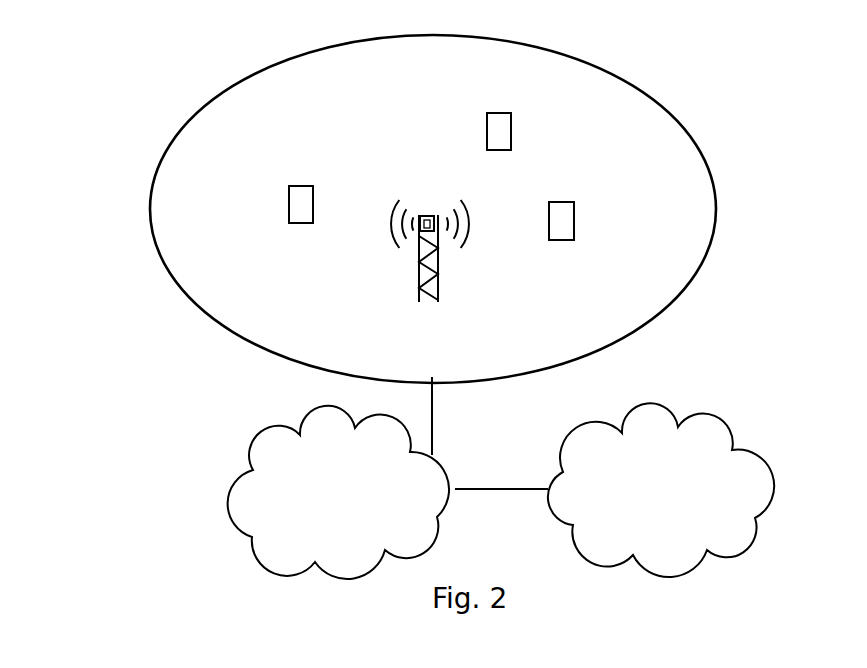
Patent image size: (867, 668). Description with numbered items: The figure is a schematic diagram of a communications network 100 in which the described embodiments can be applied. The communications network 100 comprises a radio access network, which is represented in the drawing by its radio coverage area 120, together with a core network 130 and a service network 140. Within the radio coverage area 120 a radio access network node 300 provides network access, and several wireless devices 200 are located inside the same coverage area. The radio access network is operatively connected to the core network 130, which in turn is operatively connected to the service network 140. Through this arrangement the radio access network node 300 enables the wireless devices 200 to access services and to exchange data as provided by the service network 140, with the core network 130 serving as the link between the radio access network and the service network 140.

The communications network 100 is at (143, 97).
The radio coverage area 120 is at (213, 321).
The wireless devices 200 is at (297, 192).
The radio access network node 300 is at (418, 288).
The core network 130 is at (338, 492).
The service network 140 is at (661, 490).